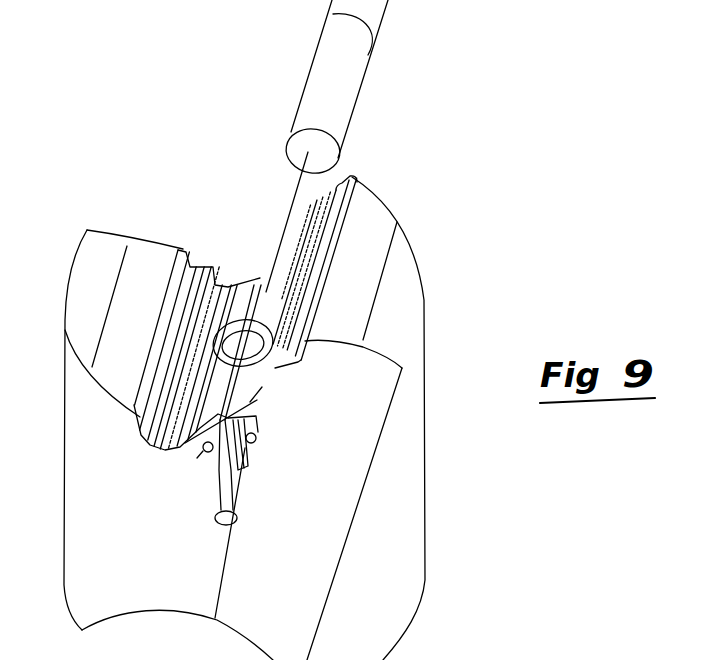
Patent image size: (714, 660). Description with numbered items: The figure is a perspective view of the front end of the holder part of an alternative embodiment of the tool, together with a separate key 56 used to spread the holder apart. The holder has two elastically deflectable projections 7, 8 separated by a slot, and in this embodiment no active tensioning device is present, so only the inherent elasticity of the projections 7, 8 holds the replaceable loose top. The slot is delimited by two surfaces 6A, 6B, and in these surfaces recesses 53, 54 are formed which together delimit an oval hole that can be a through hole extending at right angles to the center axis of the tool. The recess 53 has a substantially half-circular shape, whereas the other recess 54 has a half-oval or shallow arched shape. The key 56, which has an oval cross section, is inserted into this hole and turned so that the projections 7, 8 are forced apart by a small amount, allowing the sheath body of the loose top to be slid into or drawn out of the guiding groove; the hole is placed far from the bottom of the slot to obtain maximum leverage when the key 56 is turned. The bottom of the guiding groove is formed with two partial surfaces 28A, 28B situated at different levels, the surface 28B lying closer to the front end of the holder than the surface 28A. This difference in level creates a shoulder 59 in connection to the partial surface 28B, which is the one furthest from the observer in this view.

The key 56 is at (305, 62).
The shoulder 59 is at (232, 322).
The partial surface 28B is at (277, 295).
The partial surface 28A is at (247, 387).
The projection 8 is at (73, 370).
The projection 7 is at (413, 387).
The recess 54 is at (204, 453).
The recess 53 is at (257, 446).
The surface 6A is at (220, 493).
The surface 6B is at (240, 487).